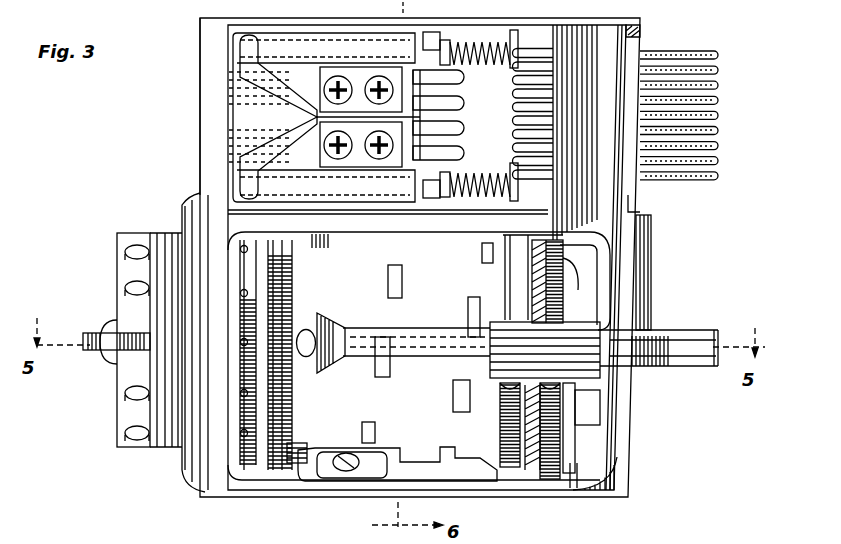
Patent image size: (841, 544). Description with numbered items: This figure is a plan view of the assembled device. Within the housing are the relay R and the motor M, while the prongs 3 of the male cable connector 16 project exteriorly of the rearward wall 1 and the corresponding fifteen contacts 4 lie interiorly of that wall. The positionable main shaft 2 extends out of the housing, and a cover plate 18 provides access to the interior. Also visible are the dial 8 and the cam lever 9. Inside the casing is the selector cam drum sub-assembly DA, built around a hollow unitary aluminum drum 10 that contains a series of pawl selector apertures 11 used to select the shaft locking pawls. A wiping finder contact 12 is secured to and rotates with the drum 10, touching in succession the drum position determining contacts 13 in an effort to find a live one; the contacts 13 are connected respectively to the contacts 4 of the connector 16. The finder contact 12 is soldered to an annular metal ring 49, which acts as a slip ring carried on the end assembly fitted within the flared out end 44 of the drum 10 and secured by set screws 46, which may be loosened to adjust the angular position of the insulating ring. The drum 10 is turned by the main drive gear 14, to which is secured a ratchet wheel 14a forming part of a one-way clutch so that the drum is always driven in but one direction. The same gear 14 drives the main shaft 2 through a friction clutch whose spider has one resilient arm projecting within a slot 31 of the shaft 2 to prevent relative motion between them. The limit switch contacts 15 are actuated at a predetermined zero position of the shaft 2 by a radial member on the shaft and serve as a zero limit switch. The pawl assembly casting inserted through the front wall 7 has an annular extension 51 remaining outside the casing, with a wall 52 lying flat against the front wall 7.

The wall 1 is at (605, 423).
The positionable shaft 2 is at (679, 336).
The prongs 3 is at (722, 112).
The contacts 4 is at (542, 72).
The front wall 7 is at (200, 148).
The dial 8 is at (170, 453).
The cam lever 9 is at (100, 353).
The selector cam drum 10 is at (383, 377).
The pawl selector apertures 11 is at (375, 433).
The wiping finder contact 12 is at (253, 318).
The drum position determining contacts 13 is at (244, 433).
The main drive gear 14 is at (563, 245).
The ratchet wheel 14a is at (500, 432).
The limit switch contacts 15 is at (575, 362).
The male cable connector 16 is at (632, 206).
The cover plate 18 is at (650, 282).
The slot 31 is at (680, 355).
The flared out end 44 is at (297, 452).
The set screws 46 is at (330, 338).
The annular metal ring 49 is at (275, 352).
The annular extension 51 is at (187, 195).
The wall 52 is at (203, 235).
The relay R is at (273, 117).
The motor M is at (447, 115).
The selector cam drum sub-assembly DA is at (410, 463).